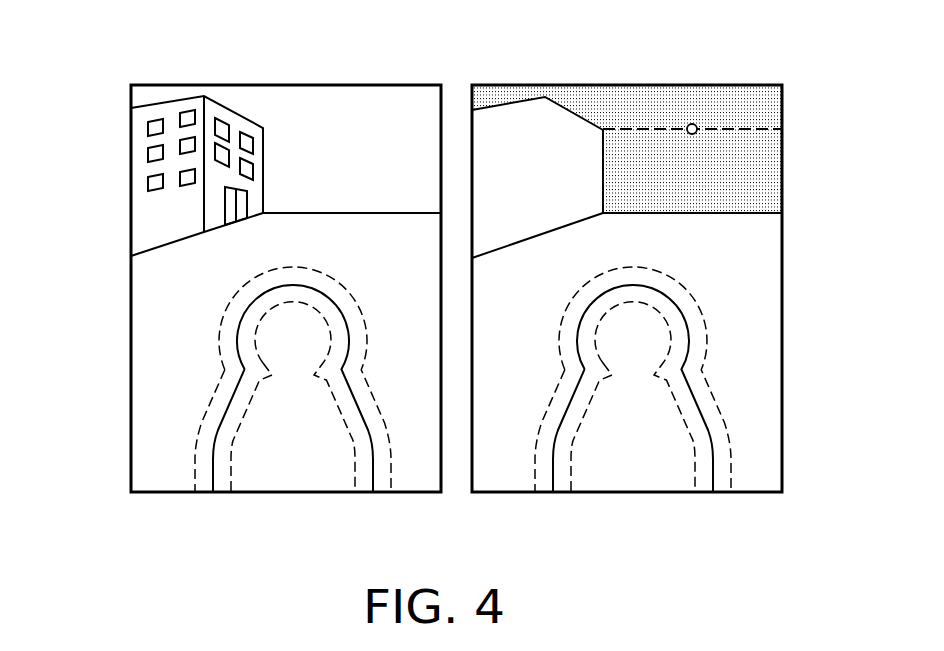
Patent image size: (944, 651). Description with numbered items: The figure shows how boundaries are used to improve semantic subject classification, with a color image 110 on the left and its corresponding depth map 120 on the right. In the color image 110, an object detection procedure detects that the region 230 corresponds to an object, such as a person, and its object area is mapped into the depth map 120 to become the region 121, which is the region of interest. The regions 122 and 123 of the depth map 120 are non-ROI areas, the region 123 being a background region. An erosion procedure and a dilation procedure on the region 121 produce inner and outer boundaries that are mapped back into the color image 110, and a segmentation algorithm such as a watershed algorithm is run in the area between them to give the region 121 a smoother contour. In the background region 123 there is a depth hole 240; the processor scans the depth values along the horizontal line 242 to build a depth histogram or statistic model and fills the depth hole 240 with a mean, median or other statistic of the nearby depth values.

The color image 110 is at (362, 85).
The depth map 120 is at (703, 85).
The region 121 is at (713, 438).
The region 122 is at (517, 127).
The region 123 is at (755, 152).
The region 230 is at (238, 352).
The depth hole 240 is at (691, 123).
The horizontal line 242 is at (758, 128).